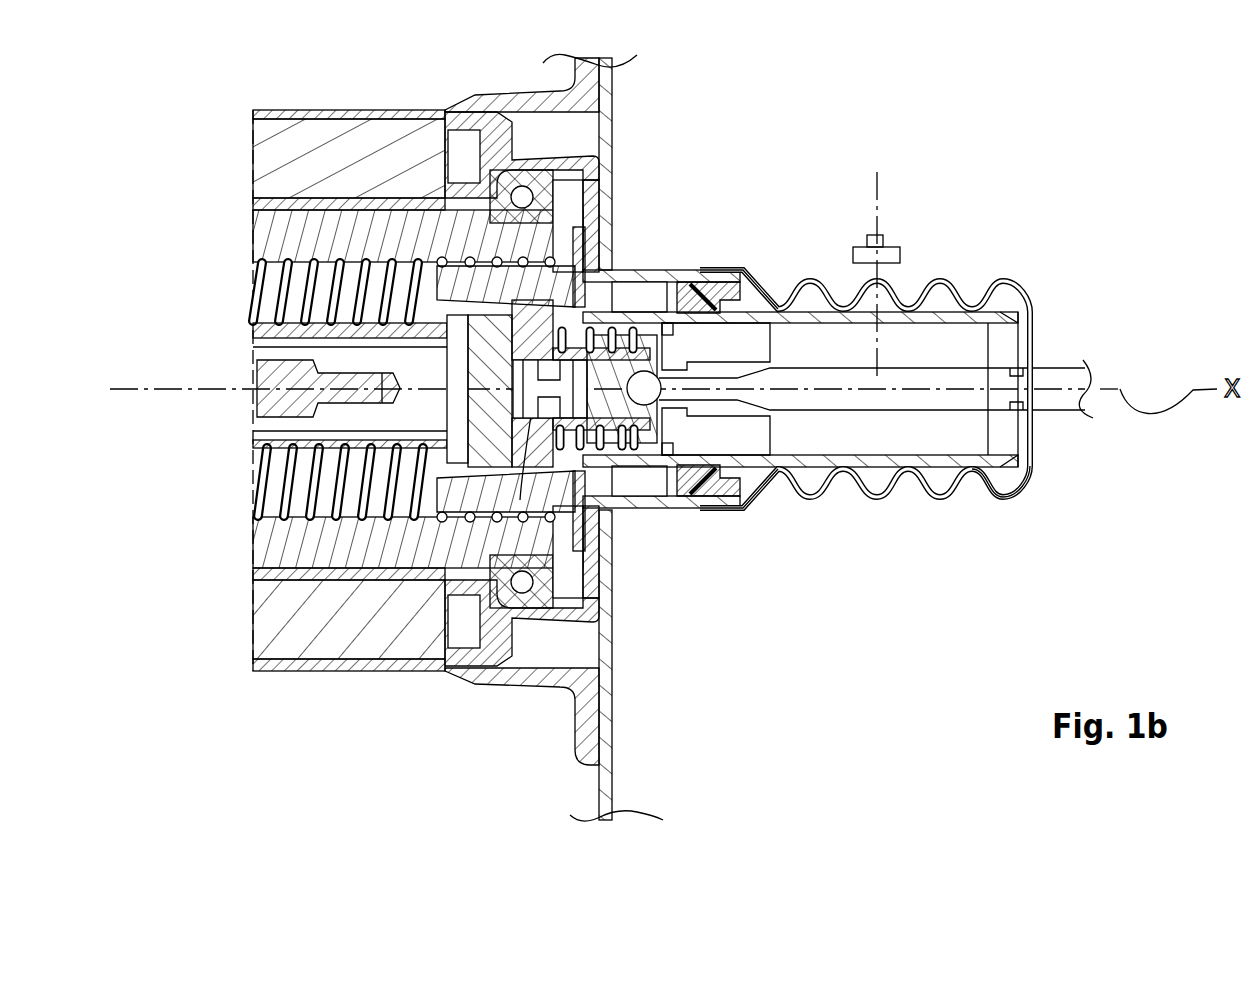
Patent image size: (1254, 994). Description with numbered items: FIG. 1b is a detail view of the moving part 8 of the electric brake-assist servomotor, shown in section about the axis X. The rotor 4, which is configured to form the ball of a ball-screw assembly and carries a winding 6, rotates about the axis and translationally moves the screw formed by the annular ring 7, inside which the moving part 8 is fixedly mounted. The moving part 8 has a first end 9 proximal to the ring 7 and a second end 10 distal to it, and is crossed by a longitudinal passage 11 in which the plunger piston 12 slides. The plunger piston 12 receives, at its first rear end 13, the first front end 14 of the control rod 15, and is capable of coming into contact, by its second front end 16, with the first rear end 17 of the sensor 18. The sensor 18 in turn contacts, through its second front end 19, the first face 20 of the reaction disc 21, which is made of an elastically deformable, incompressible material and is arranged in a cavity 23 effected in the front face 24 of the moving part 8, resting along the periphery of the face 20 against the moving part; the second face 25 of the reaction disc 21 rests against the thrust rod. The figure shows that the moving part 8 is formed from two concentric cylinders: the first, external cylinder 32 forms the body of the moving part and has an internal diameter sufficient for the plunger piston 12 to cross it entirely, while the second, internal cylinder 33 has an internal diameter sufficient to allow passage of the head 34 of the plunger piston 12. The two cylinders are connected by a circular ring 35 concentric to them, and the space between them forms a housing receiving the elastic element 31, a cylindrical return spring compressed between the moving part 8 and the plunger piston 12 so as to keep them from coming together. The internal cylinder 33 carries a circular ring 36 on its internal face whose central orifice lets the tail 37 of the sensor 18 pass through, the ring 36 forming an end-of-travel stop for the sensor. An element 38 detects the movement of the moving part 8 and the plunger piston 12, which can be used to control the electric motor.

The rotor 4 is at (278, 555).
The winding 6 is at (352, 132).
The annular ring 7 is at (460, 280).
The moving part 8 is at (953, 305).
The first end 9 is at (540, 430).
The second end 10 is at (972, 480).
The longitudinal passage 11 is at (943, 445).
The plunger piston 12 is at (693, 475).
The first rear end 13 is at (698, 367).
The first front end 14 is at (762, 470).
The control rod 15 is at (952, 377).
The second front end 16 is at (605, 548).
The first rear end 17 is at (605, 320).
The sensor 18 is at (517, 385).
The second front end 19 is at (520, 500).
The first face 20 is at (540, 360).
The reaction disc 21 is at (470, 432).
The cavity 23 is at (447, 365).
The front face 24 is at (392, 220).
The second face 25 is at (470, 400).
The elastic element 31 is at (625, 470).
The first cylinder 32 is at (817, 318).
The second cylinder 33 is at (645, 312).
The head 34 is at (652, 460).
The circular ring 35 is at (606, 548).
The circular ring 36 is at (593, 403).
The tail 37 is at (553, 588).
The detection element 38 is at (893, 247).